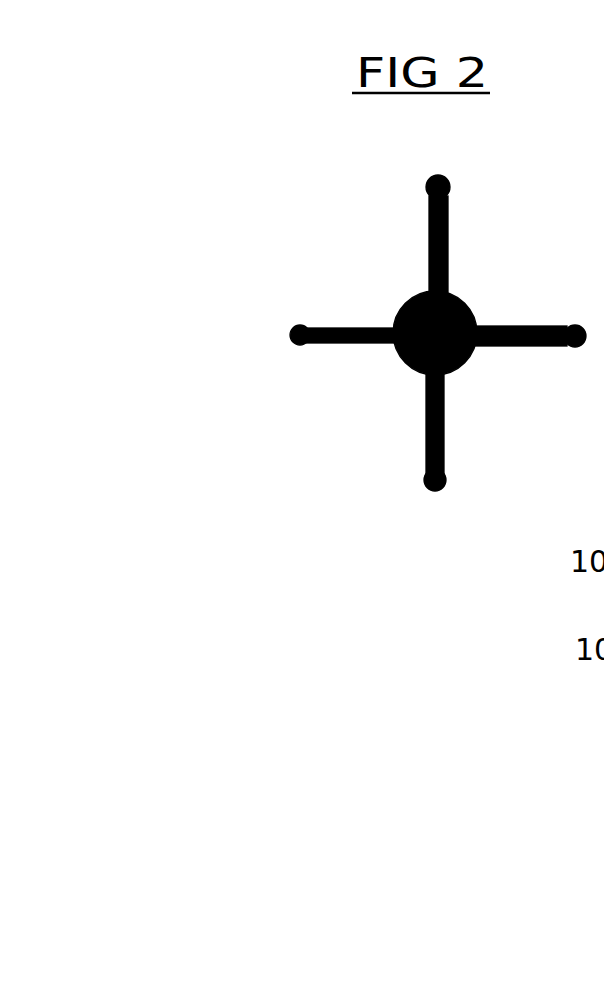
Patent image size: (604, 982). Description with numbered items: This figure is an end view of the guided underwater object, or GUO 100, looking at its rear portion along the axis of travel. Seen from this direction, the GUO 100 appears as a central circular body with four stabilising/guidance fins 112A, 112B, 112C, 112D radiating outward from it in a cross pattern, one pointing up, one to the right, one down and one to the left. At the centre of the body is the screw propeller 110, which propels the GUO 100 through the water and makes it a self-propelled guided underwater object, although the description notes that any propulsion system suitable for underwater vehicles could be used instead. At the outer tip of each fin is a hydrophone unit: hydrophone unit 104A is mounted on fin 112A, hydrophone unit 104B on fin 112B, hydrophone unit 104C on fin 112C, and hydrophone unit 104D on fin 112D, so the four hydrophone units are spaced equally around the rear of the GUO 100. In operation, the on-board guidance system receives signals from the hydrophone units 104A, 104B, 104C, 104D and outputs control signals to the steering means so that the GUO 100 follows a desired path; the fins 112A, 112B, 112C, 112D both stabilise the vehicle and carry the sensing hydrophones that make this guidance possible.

The GUO 100 is at (311, 550).
The screw propeller 110 is at (465, 364).
The stabilising/guidance fin 112A is at (430, 245).
The stabilising/guidance fin 112B is at (518, 327).
The stabilising/guidance fin 112C is at (427, 430).
The stabilising/guidance fin 112D is at (345, 327).
The hydrophone unit 104A is at (426, 185).
The hydrophone unit 104B is at (575, 326).
The hydrophone unit 104C is at (433, 492).
The hydrophone unit 104D is at (291, 335).